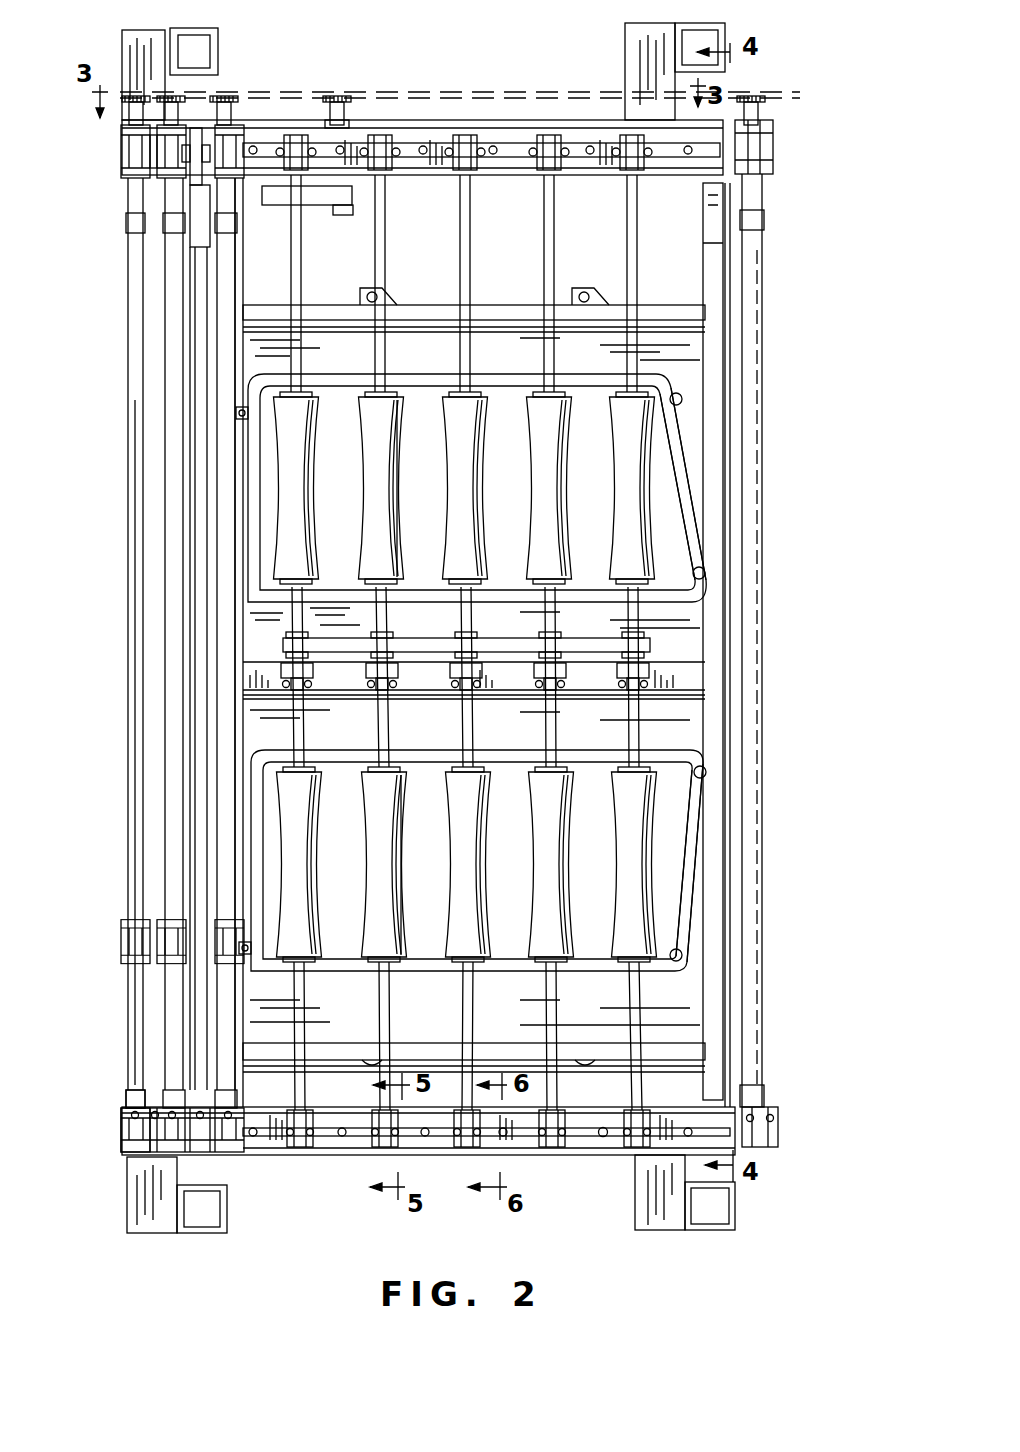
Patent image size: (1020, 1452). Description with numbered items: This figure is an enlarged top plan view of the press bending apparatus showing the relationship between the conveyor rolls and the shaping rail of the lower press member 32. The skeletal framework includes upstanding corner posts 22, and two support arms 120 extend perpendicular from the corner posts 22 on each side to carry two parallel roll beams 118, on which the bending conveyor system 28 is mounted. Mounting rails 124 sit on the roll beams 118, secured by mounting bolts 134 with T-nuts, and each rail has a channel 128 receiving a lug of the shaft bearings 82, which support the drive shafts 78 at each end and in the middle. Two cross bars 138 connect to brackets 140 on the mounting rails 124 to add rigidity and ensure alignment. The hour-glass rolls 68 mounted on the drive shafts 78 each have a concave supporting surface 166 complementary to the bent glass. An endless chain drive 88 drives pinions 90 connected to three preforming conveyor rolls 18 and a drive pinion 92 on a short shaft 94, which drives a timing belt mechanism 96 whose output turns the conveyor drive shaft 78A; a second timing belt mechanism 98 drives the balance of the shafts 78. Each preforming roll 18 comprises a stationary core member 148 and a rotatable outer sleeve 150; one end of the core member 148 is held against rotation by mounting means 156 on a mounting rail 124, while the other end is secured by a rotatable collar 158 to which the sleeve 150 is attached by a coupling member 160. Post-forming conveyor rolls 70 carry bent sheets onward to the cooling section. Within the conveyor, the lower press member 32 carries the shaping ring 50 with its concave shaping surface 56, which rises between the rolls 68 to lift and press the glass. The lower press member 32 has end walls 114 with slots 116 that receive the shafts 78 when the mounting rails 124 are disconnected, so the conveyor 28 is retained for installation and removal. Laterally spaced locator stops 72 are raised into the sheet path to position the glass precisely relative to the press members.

The preforming conveyor rolls 18 is at (165, 527).
The corner posts 22 is at (215, 40).
The conveyor system 28 is at (668, 495).
The lower press member 32 is at (778, 335).
The shaping ring 50 is at (660, 455).
The shaping surface 56 is at (690, 535).
The rolls 68 is at (370, 430).
The conveyor rolls 70 is at (762, 665).
The locator stops 72 is at (680, 394).
The drive shafts 78 is at (386, 195).
The conveyor drive shaft 78A is at (296, 248).
The shaft bearings 82 is at (528, 180).
The endless chain drive 88 is at (428, 92).
The pinions 90 is at (178, 100).
The drive pinion 92 is at (342, 95).
The short shaft 94 is at (350, 112).
The timing belt mechanism 96 is at (350, 212).
The second timing belt mechanism 98 is at (498, 640).
The end walls 114 is at (680, 305).
The slots 116 is at (535, 307).
The roll beams 118 is at (572, 125).
The support arms 120 is at (125, 46).
The mounting rails 124 is at (487, 135).
The channel 128 is at (517, 143).
The mounting bolts 134 is at (608, 1135).
The cross bars 138 is at (197, 326).
The brackets 140 is at (212, 135).
The core member 148 is at (128, 1110).
The sleeve 150 is at (135, 1015).
The mounting means 156 is at (126, 1115).
The rotatable collar 158 is at (130, 198).
The coupling member 160 is at (132, 228).
The supporting surface 166 is at (400, 497).